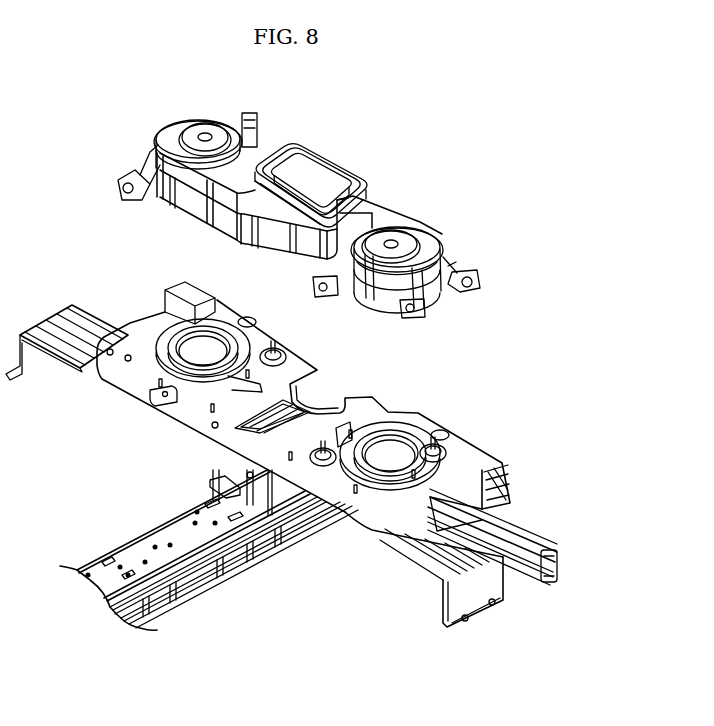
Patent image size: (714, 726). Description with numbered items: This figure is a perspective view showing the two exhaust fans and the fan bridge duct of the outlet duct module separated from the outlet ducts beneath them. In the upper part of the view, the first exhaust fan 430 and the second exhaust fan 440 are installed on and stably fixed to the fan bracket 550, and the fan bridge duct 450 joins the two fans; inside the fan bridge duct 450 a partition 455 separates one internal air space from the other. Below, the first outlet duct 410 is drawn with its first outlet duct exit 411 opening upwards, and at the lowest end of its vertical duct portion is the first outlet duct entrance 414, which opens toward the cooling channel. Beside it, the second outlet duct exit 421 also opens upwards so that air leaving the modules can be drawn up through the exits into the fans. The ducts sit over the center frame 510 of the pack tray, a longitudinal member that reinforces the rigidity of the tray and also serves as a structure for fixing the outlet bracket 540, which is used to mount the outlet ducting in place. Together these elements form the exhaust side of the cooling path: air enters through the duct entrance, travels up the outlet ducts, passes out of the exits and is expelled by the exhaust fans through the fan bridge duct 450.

The first outlet duct 410 is at (500, 554).
The first outlet duct exit 411 is at (390, 460).
The first outlet duct entrance 414 is at (528, 566).
The second outlet duct exit 421 is at (205, 350).
The first exhaust fan 430 is at (426, 214).
The second exhaust fan 440 is at (207, 116).
The fan bridge duct 450 is at (364, 165).
The partition 455 is at (302, 186).
The center frame 510 is at (137, 550).
The outlet bracket 540 is at (40, 332).
The fan bracket 550 is at (422, 425).